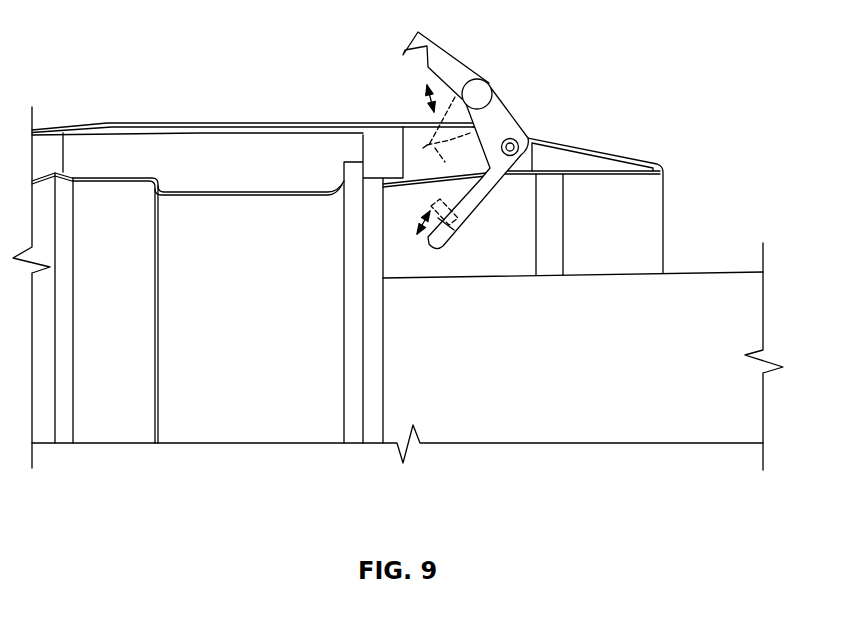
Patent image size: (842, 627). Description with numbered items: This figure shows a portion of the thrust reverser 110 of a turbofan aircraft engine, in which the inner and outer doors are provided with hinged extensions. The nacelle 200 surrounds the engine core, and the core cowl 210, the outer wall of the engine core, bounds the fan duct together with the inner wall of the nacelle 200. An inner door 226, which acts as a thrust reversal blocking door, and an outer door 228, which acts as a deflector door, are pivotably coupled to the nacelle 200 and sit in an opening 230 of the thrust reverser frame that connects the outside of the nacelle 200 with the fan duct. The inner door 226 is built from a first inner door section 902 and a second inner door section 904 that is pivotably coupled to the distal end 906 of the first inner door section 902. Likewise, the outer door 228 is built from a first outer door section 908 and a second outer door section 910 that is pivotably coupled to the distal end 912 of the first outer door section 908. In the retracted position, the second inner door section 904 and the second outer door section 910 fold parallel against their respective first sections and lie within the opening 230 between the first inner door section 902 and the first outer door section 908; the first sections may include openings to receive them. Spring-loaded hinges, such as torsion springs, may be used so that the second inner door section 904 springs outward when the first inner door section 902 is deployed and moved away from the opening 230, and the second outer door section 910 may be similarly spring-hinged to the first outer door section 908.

The thrust reverser 110 is at (367, 52).
The nacelle 200 is at (220, 122).
The core cowl 210 is at (700, 272).
The inner door 226 is at (499, 220).
The outer door 228 is at (514, 76).
The opening 230 is at (409, 110).
The first inner door section 902 is at (500, 183).
The second inner door section 904 is at (439, 244).
The distal end of the first inner door section 906 is at (457, 225).
The first outer door section 908 is at (505, 127).
The second outer door section 910 is at (447, 60).
The distal end of the first outer door section 912 is at (493, 98).